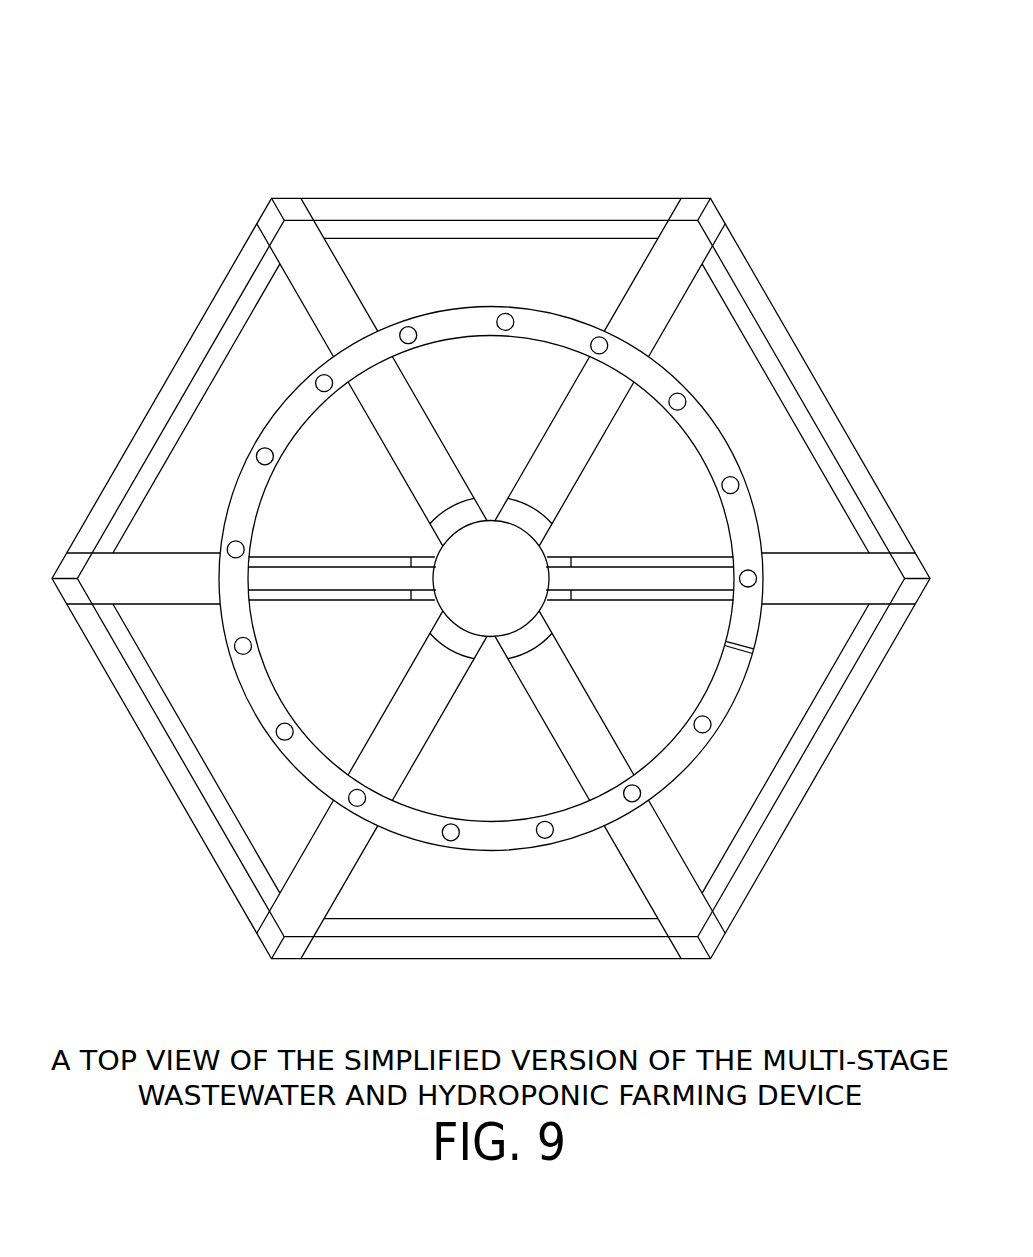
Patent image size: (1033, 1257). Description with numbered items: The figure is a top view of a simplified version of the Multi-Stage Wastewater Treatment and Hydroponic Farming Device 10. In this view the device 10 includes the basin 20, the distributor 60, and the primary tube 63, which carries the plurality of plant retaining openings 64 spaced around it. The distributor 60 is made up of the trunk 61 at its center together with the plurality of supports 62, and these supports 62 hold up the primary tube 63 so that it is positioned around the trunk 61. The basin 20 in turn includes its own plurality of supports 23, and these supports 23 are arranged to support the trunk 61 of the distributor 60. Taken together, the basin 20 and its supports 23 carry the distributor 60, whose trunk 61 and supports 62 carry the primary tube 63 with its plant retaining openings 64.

The Multi-Stage Wastewater Treatment and Hydroponic Farming Device 10 is at (142, 152).
The basin 20 is at (162, 846).
The supports 23 is at (402, 445).
The distributor 60 is at (578, 305).
The trunk 61 is at (491, 579).
The supports 62 is at (396, 578).
The primary tube 63 is at (693, 455).
The plant retaining openings 64 is at (262, 450).